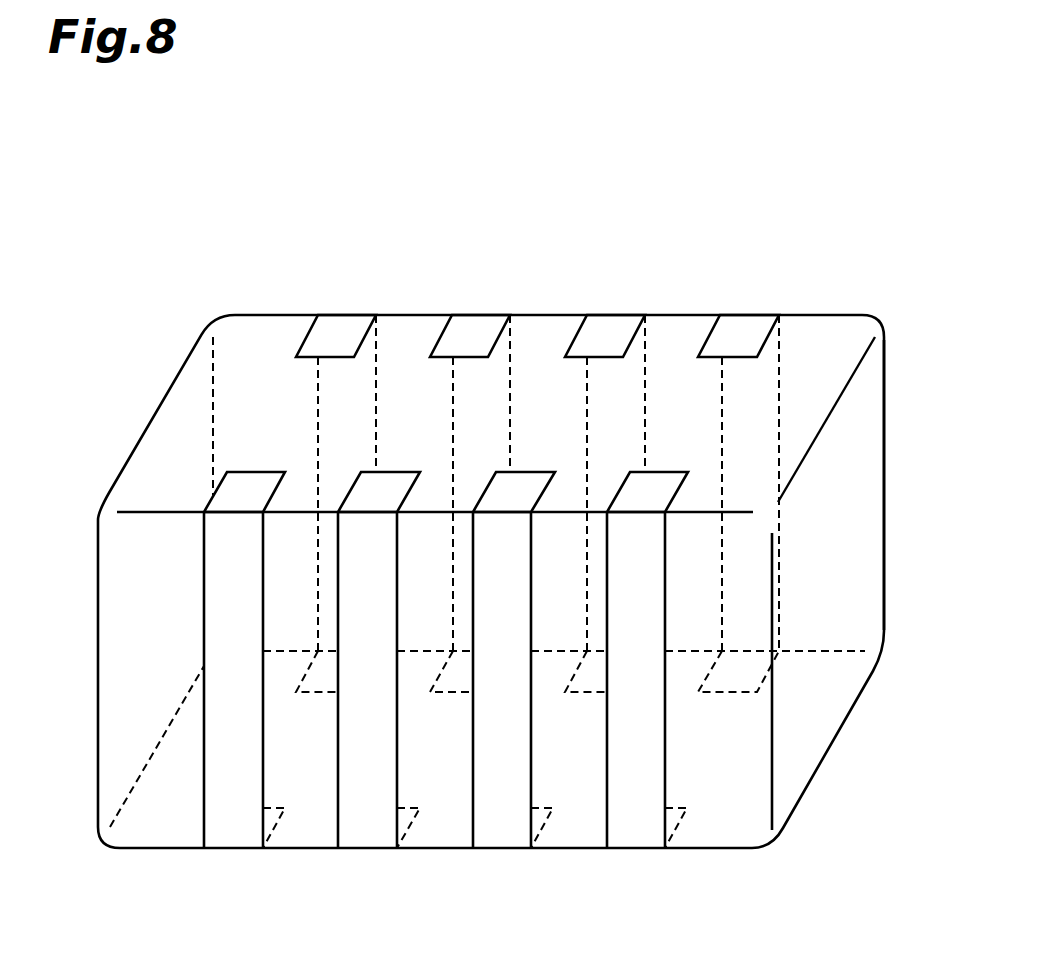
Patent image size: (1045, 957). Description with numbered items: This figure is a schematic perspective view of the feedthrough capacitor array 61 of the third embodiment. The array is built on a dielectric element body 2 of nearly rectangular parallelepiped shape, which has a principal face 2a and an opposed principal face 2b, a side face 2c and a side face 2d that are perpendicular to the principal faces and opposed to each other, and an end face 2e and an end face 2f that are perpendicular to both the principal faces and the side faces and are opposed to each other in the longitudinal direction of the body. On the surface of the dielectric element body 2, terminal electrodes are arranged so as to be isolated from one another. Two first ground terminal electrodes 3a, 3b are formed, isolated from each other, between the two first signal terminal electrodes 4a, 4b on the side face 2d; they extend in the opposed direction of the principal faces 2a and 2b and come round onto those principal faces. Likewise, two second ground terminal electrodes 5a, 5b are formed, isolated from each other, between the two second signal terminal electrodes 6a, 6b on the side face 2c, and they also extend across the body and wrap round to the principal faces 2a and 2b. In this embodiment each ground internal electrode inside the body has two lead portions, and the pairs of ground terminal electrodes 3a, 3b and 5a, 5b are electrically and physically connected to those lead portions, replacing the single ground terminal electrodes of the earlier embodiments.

The feedthrough capacitor array 61 is at (766, 181).
The dielectric element body 2 is at (863, 318).
The principal face 2a is at (405, 368).
The principal face 2b is at (580, 807).
The side face 2c is at (315, 760).
The side face 2d is at (670, 372).
The end face 2e is at (847, 543).
The end face 2f is at (137, 580).
The first ground terminal electrode 3a is at (477, 328).
The first ground terminal electrode 3b is at (607, 328).
The first signal terminal electrode 4a is at (340, 328).
The first signal terminal electrode 4b is at (740, 328).
The second ground terminal electrode 5a is at (367, 828).
The second ground terminal electrode 5b is at (498, 828).
The second signal terminal electrode 6a is at (233, 828).
The second signal terminal electrode 6b is at (633, 828).